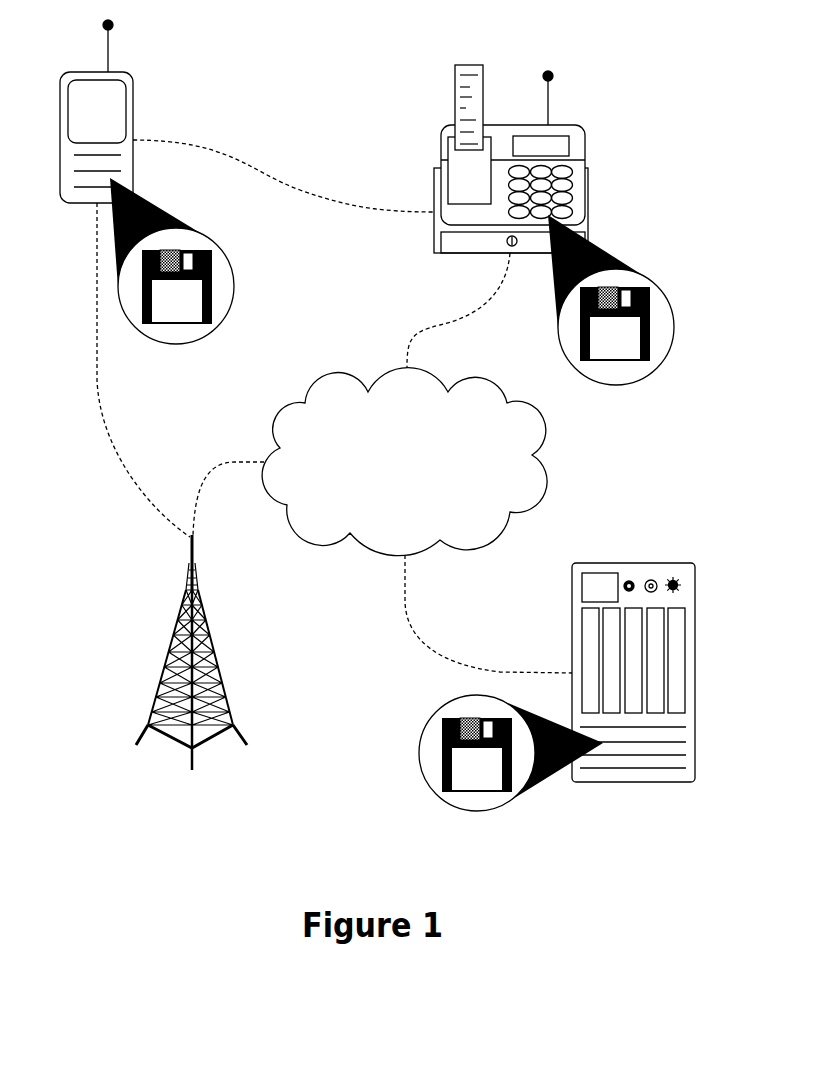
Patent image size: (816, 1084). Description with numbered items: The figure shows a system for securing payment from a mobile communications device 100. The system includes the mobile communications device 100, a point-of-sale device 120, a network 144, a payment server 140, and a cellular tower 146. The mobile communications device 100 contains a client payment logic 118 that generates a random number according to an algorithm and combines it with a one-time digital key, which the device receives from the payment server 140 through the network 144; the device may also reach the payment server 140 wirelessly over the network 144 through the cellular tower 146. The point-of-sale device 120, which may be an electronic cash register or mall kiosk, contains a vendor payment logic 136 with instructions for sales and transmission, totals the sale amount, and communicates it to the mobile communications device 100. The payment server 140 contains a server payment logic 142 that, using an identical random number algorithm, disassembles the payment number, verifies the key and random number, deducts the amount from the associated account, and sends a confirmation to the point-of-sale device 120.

The mobile communications device 100 is at (167, 111).
The client payment logic 118 is at (232, 261).
The point-of-sale device 120 is at (572, 159).
The vendor payment logic 136 is at (649, 300).
The payment server 140 is at (597, 704).
The server payment logic 142 is at (452, 752).
The network 144 is at (476, 462).
The cellular tower 146 is at (141, 652).